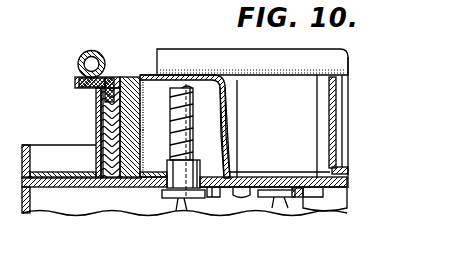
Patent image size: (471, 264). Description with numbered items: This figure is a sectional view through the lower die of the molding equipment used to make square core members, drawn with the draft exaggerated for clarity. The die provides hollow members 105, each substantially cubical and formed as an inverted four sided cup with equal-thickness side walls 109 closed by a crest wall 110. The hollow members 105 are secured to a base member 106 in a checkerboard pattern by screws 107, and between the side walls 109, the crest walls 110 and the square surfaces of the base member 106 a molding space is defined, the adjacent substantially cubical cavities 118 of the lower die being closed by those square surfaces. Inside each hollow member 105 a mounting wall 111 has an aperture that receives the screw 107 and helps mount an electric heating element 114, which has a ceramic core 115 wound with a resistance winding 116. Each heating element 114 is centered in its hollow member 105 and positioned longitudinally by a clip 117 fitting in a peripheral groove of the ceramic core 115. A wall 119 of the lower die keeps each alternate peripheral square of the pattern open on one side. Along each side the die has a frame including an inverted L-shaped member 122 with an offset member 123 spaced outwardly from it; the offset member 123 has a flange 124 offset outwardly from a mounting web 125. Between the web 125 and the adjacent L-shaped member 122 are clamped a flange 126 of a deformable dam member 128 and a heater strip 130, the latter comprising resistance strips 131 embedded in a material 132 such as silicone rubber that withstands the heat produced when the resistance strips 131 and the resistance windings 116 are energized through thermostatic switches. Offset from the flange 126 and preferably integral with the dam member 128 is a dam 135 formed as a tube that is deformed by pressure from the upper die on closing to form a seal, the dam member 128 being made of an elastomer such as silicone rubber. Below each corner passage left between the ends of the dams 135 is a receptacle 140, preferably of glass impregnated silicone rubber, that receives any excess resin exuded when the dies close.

The hollow member 105 is at (231, 89).
The base member 106 is at (137, 186).
The screw 107 is at (248, 194).
The side wall 109 is at (238, 126).
The crest wall 110 is at (204, 79).
The mounting wall 111 is at (153, 179).
The electric heating element 114 is at (206, 164).
The ceramic core 115 is at (231, 142).
The resistance winding 116 is at (173, 127).
The clip 117 is at (210, 196).
The cubical cavity 118 is at (298, 117).
The wall 119 is at (134, 79).
The inverted L-shaped member 122 is at (139, 89).
The offset member 123 is at (70, 88).
The flange 124 is at (76, 79).
The mounting web 125 is at (100, 97).
The flange 126 is at (102, 107).
The deformable dam member 128 is at (92, 46).
The heater strip 130 is at (113, 74).
The resistance strip 131 is at (140, 107).
The material 132 is at (129, 78).
The dam 135 is at (79, 57).
The receptacle 140 is at (78, 169).